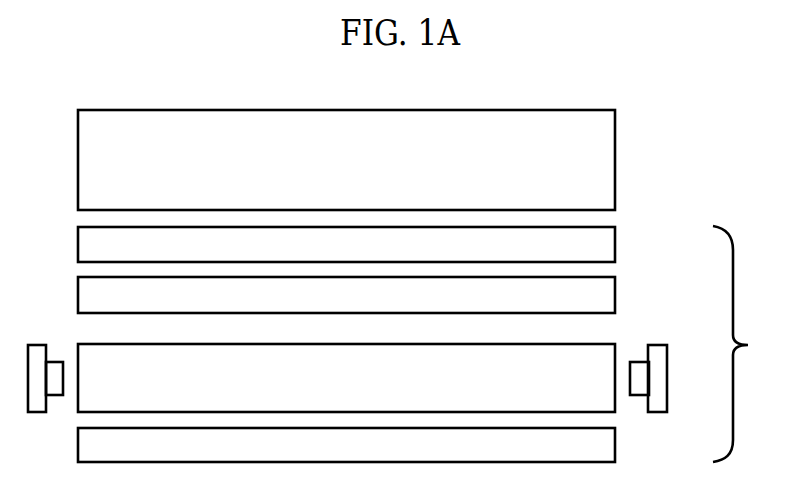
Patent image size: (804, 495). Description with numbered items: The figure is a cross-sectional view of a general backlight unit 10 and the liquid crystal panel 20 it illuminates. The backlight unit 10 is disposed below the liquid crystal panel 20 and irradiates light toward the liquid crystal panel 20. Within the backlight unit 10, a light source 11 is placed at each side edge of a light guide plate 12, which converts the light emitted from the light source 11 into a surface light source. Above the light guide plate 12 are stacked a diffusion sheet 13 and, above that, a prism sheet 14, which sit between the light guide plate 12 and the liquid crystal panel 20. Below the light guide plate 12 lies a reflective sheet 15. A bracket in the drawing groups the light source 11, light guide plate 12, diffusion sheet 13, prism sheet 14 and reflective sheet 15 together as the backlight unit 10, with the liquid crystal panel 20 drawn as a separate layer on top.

The backlight unit 10 is at (780, 355).
The light source 11 is at (53, 362).
The light guide plate 12 is at (615, 402).
The diffusion sheet 13 is at (615, 289).
The prism sheet 14 is at (615, 245).
The reflective sheet 15 is at (615, 447).
The liquid crystal panel 20 is at (615, 166).